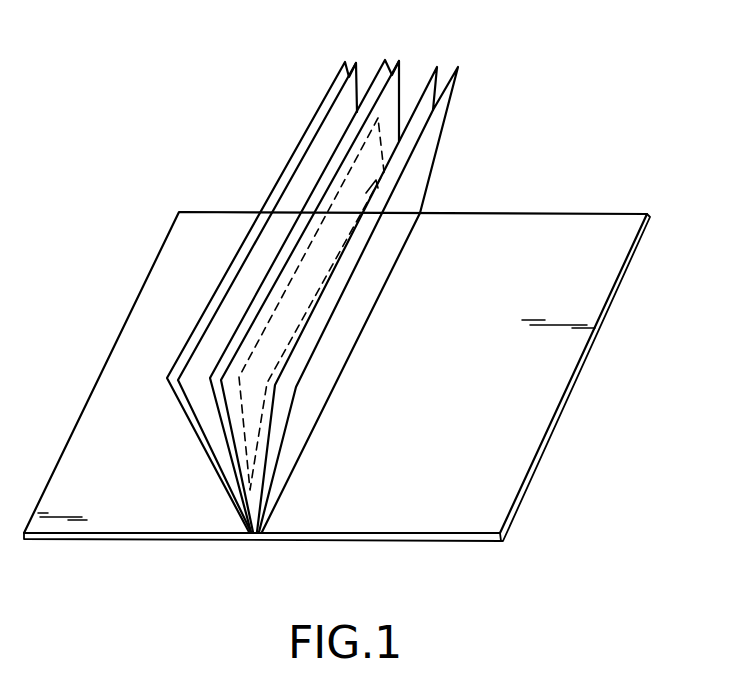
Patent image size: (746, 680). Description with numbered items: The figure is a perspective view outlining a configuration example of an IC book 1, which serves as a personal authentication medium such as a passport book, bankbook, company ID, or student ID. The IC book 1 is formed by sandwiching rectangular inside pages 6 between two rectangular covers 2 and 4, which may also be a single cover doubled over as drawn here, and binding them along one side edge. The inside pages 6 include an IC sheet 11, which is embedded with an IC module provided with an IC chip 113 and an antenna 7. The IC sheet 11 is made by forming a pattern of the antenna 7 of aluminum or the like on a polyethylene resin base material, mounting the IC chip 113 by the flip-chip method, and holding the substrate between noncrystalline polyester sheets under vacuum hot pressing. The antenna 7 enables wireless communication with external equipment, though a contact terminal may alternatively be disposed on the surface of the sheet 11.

The IC book 1 is at (553, 83).
The cover 2 is at (166, 243).
The cover 4 is at (612, 266).
The inside pages 6 is at (463, 50).
The antenna 7 is at (262, 333).
The IC sheet 11 is at (275, 283).
The IC chip 113 is at (367, 192).